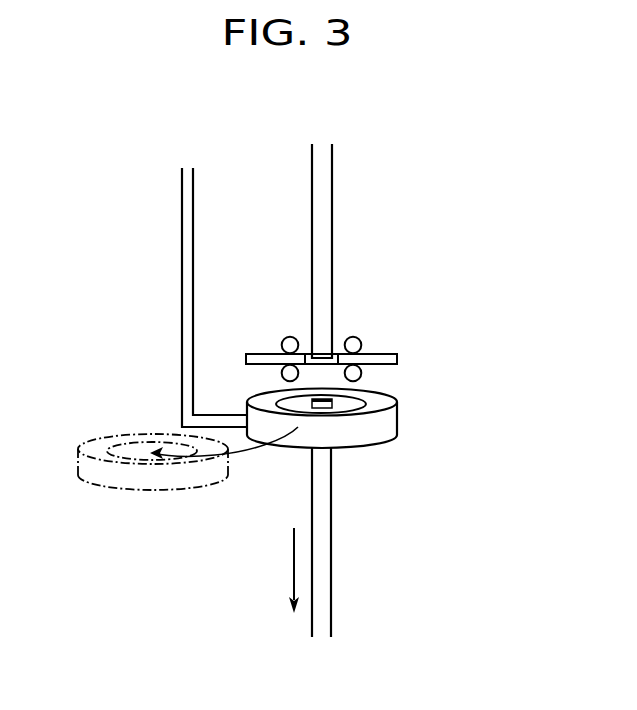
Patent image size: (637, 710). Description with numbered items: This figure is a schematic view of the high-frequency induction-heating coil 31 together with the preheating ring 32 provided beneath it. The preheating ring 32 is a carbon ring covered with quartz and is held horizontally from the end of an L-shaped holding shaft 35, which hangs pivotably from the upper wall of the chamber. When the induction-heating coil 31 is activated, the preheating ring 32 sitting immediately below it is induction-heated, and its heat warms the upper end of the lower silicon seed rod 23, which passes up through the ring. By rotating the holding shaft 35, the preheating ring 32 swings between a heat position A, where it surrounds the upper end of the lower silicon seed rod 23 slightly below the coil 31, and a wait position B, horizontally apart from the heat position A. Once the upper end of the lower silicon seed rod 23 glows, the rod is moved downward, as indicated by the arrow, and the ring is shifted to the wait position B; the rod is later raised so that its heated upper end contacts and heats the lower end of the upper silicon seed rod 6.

The upper silicon seed rod 6 is at (327, 201).
The holding shaft 35 is at (184, 273).
The high-frequency induction-heating coil 31 is at (397, 353).
The preheating ring 32 is at (383, 443).
The lower silicon seed rod 23 is at (325, 558).
The heat position A is at (302, 453).
The wait position B is at (157, 494).